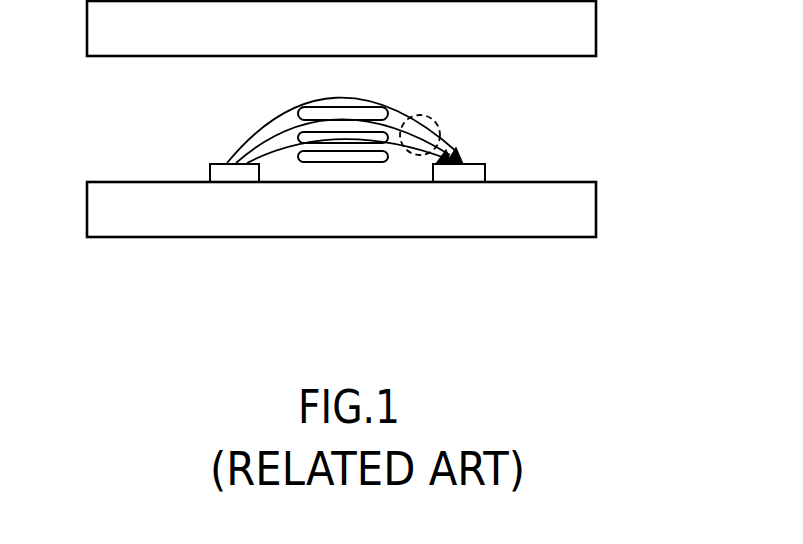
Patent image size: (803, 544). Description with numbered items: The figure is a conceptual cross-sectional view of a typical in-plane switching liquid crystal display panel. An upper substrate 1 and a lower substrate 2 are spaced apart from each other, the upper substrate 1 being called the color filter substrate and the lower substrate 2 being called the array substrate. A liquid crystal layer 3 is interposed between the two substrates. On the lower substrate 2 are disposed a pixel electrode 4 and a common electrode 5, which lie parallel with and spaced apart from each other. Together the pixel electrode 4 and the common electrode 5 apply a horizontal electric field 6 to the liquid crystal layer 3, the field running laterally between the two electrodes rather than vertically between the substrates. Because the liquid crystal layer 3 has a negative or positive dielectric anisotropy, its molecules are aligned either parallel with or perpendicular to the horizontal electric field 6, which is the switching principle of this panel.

The upper substrate 1 is at (573, 33).
The lower substrate 2 is at (585, 213).
The liquid crystal layer 3 is at (332, 162).
The pixel electrode 4 is at (233, 172).
The common electrode 5 is at (466, 170).
The horizontal electric field 6 is at (410, 155).